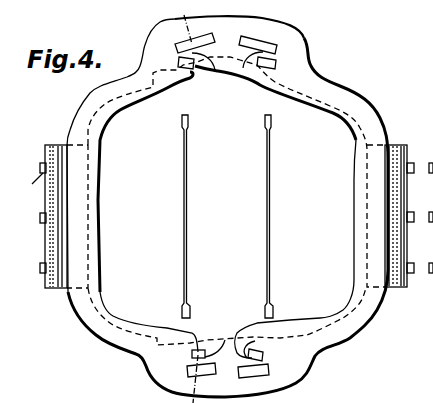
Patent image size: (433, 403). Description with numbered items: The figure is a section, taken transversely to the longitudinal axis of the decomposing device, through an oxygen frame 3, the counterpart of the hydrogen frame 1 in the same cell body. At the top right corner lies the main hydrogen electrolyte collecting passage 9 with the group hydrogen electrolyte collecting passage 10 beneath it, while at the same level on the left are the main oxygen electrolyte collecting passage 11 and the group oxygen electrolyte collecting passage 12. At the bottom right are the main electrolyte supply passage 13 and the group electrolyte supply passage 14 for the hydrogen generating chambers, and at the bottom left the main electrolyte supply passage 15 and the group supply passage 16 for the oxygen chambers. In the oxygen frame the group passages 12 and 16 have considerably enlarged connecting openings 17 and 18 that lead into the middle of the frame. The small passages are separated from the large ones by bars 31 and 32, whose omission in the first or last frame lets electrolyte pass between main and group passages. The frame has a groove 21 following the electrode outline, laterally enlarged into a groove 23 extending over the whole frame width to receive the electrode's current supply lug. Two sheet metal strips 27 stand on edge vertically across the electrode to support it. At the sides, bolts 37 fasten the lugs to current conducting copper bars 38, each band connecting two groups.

The hydrogen frame 1 is at (192, 34).
The oxygen frame 3 is at (345, 98).
The main hydrogen electrolyte collecting passage 9 is at (268, 45).
The group hydrogen electrolyte collecting passage 10 is at (277, 63).
The main oxygen electrolyte collecting passage 11 is at (176, 46).
The group oxygen electrolyte collecting passage 12 is at (179, 62).
The main electrolyte supply passage 13 is at (258, 376).
The group electrolyte supply passage 14 is at (256, 352).
The main electrolyte supply passage 15 is at (188, 368).
The group supply passage 16 is at (190, 356).
The connecting opening 17 is at (187, 79).
The connecting opening 18 is at (195, 350).
The groove 21 is at (93, 126).
The groove 23 is at (66, 293).
The sheet metal strips 27 is at (267, 228).
The bar 31 is at (243, 67).
The bar 32 is at (236, 345).
The bolts 37 is at (43, 213).
The copper bars 38 is at (48, 153).